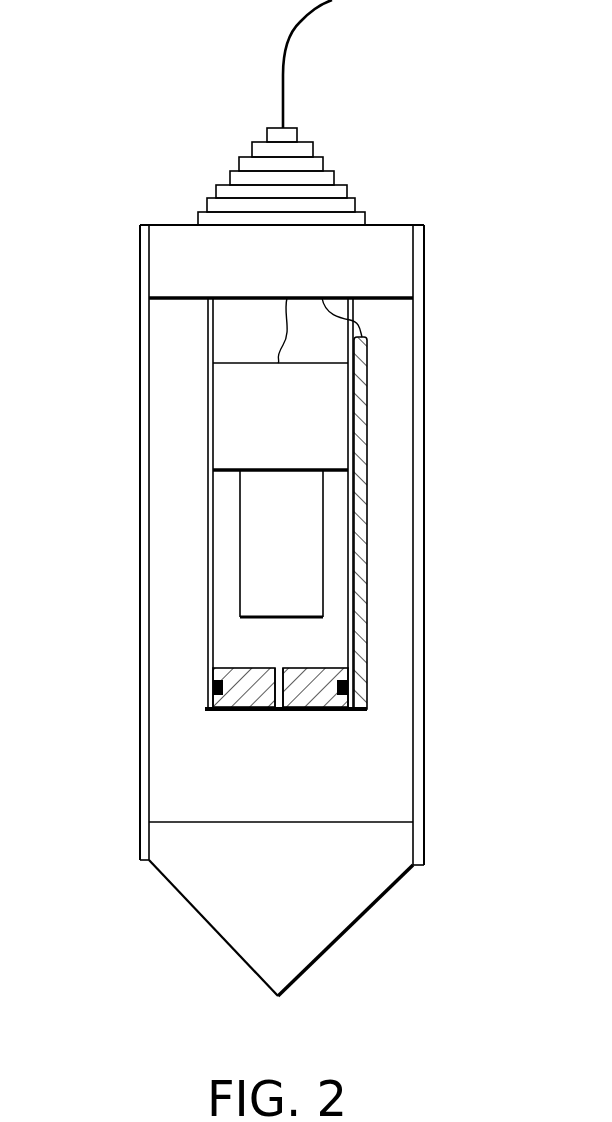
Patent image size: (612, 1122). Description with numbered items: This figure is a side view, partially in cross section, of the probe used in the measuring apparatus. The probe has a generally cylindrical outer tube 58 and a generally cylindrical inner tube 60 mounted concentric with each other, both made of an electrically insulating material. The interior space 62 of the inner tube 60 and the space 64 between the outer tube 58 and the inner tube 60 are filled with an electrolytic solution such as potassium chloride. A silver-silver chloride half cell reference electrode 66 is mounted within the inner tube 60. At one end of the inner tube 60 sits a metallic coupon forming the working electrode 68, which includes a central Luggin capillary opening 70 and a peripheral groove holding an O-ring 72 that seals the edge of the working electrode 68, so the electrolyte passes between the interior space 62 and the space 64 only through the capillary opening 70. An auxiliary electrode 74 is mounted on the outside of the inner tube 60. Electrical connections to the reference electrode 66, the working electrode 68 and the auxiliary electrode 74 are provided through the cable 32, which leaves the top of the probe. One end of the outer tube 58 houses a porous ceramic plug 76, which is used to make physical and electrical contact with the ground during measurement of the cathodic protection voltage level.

The cable 32 is at (328, 3).
The outer tube 58 is at (416, 632).
The inner tube 60 is at (207, 548).
The interior space 62 is at (263, 658).
The space between tubes 64 is at (193, 777).
The reference electrode 66 is at (295, 558).
The working electrode 68 is at (247, 703).
The Luggin capillary opening 70 is at (280, 708).
The O-ring 72 is at (335, 700).
The auxiliary electrode 74 is at (368, 422).
The porous ceramic plug 76 is at (328, 895).